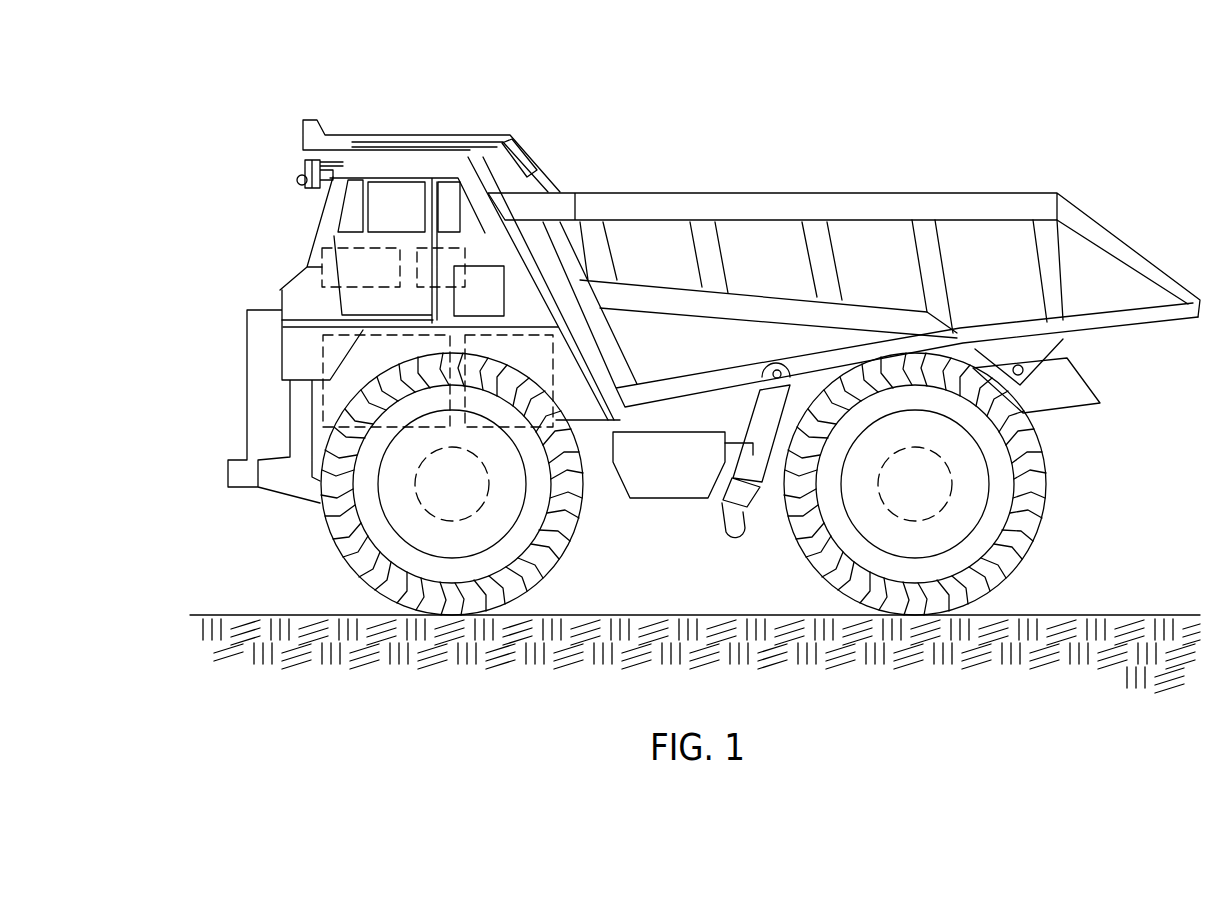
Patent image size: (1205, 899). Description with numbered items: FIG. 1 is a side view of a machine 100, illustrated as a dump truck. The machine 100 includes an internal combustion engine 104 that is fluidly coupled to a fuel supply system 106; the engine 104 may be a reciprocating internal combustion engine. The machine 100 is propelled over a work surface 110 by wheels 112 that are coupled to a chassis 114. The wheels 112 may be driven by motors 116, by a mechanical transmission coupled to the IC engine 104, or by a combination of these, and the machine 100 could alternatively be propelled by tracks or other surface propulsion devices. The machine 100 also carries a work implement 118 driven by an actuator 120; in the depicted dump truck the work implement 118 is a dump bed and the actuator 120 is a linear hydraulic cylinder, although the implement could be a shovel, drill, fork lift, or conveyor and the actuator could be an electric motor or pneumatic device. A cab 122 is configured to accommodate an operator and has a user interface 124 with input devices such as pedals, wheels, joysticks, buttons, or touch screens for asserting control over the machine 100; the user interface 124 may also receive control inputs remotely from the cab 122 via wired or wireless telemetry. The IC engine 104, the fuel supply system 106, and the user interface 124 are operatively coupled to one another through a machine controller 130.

The machine 100 is at (966, 57).
The internal combustion engine 104 is at (322, 338).
The fuel supply system 106 is at (498, 333).
The work surface 110 is at (1176, 614).
The wheels 112 is at (536, 563).
The chassis 114 is at (596, 447).
The motors 116 is at (416, 504).
The work implement 118 is at (986, 192).
The actuator 120 is at (765, 487).
The cab 122 is at (236, 176).
The user interface 124 is at (320, 258).
The machine controller 130 is at (457, 247).